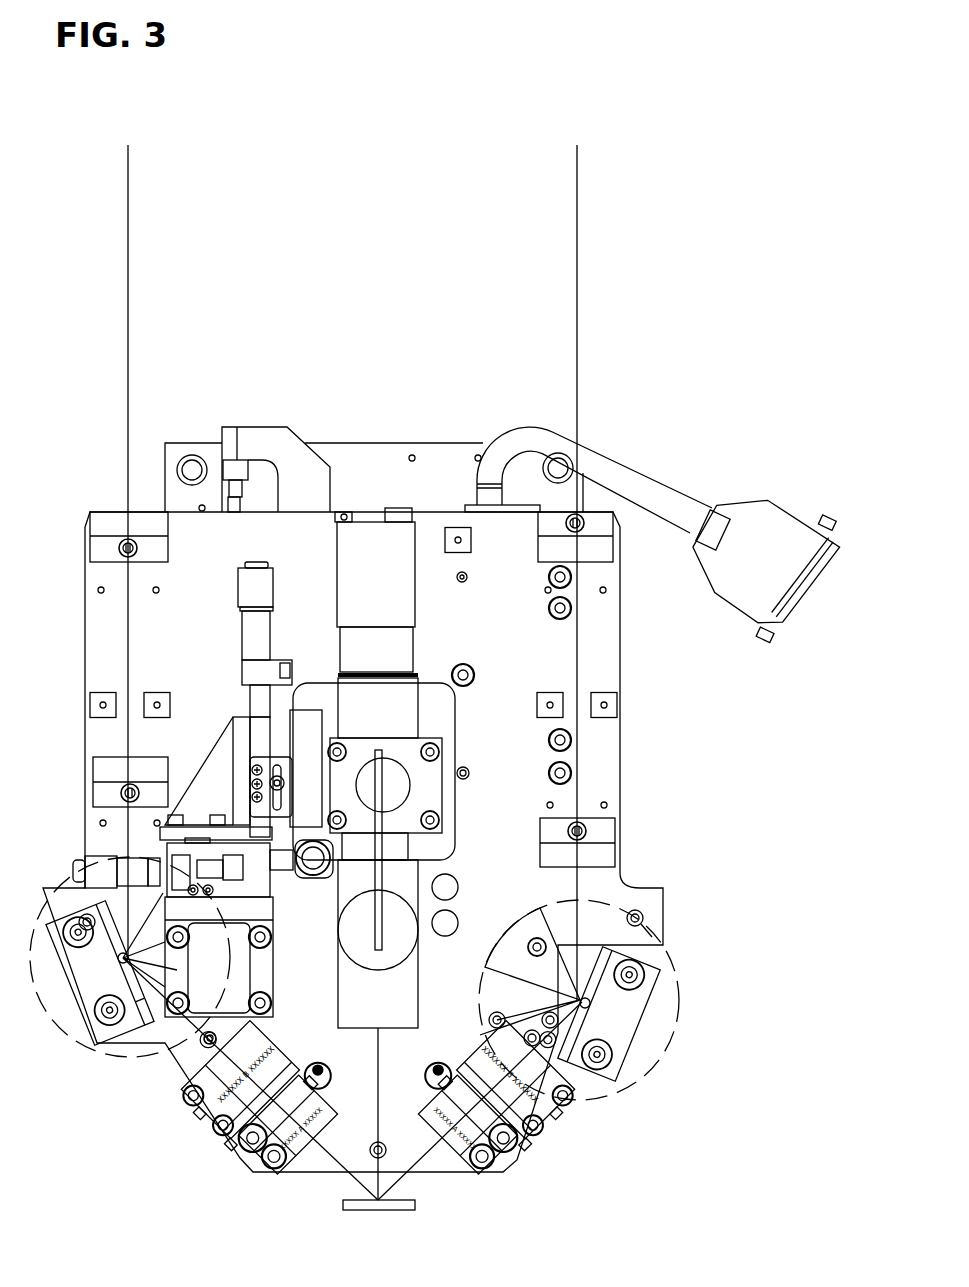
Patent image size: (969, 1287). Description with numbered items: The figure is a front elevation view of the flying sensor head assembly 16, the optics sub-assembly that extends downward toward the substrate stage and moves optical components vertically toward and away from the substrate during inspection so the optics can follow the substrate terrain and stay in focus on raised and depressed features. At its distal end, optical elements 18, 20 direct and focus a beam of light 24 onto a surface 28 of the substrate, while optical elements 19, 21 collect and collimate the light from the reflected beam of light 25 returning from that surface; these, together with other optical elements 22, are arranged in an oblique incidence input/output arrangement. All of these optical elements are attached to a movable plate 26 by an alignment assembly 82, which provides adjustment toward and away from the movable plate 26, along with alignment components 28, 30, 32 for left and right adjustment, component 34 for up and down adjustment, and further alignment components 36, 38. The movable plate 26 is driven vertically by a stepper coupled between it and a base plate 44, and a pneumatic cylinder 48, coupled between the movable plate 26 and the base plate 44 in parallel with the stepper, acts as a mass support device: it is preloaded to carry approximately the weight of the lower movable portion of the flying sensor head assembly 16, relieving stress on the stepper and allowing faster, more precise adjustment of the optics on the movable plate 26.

The flying sensor head assembly 16 is at (665, 377).
The optical element 18 is at (108, 981).
The optical element 19 is at (633, 1026).
The optical element 20 is at (307, 1163).
The optical element 21 is at (455, 1163).
The other optical elements 22 is at (394, 603).
The beam of light 24 is at (128, 645).
The reflected beam of light 25 is at (578, 647).
The movable plate 26 is at (525, 595).
The surface of substrate / alignment assembly component 28 is at (100, 553).
The alignment assembly component 30 is at (100, 795).
The alignment assembly component 32 is at (90, 858).
The alignment assembly component 34 is at (265, 593).
The alignment assembly component 36 is at (608, 548).
The alignment assembly component 38 is at (610, 832).
The base plate 44 is at (390, 483).
The pneumatic cylinder 48 is at (232, 502).
The alignment assembly 82 is at (313, 862).